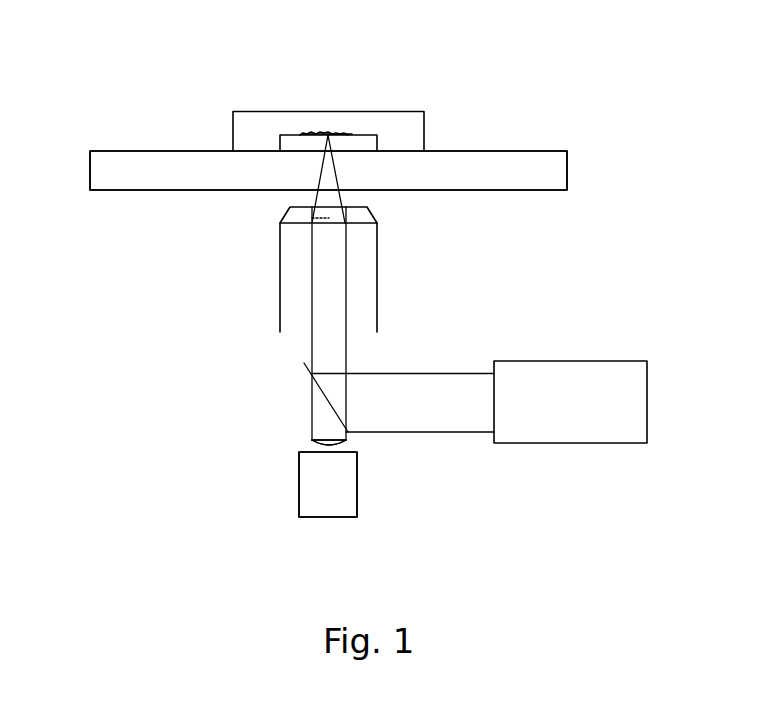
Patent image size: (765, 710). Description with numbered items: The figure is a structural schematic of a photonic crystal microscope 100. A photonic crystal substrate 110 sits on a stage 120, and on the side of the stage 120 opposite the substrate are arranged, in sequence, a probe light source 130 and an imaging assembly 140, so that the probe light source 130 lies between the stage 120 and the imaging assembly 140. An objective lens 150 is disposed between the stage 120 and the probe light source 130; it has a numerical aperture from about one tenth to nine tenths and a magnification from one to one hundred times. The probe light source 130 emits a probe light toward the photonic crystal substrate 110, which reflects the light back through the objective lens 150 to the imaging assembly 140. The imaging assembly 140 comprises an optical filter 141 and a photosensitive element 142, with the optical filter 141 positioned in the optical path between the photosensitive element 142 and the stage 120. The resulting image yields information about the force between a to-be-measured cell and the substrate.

The photonic crystal microscope 100 is at (350, 58).
The photonic crystal substrate 110 is at (381, 113).
The stage 120 is at (297, 135).
The probe light source 130 is at (497, 367).
The imaging assembly 140 is at (188, 388).
The optical filter 141 is at (269, 417).
The photosensitive element 142 is at (275, 471).
The objective lens 150 is at (243, 287).